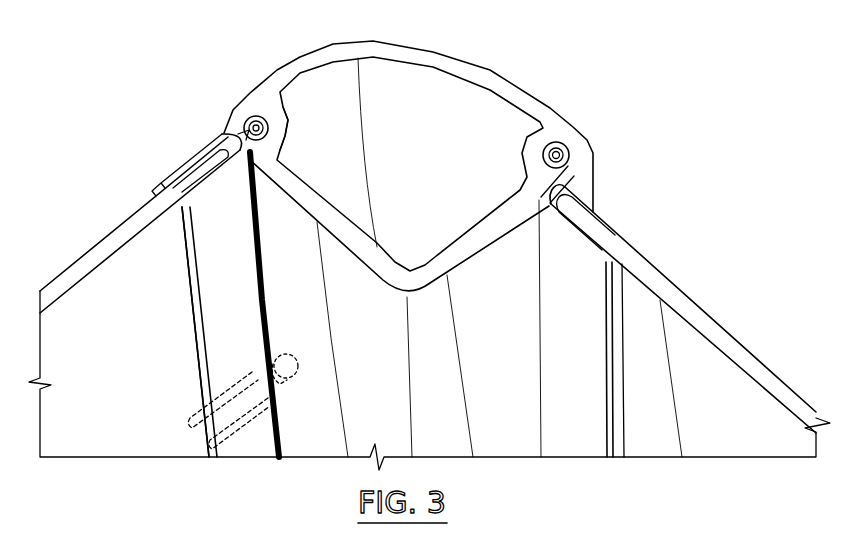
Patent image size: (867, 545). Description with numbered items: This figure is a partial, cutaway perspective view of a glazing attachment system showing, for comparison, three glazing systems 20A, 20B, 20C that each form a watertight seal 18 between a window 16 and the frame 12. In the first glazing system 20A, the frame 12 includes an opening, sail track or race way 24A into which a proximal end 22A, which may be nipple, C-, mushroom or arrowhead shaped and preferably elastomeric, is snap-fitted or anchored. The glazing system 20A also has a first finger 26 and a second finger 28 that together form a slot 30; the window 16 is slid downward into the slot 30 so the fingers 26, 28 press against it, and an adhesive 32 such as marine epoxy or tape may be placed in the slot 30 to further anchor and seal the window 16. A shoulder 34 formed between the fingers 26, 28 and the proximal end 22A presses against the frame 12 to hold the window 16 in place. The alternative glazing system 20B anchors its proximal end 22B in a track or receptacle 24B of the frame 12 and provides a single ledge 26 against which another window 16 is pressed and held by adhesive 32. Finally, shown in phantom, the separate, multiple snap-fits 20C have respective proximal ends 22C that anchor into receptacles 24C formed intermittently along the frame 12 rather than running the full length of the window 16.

The frame 12 is at (497, 87).
The window 16 is at (83, 267).
The watertight seal 18 is at (156, 150).
The glazing system 20A is at (202, 137).
The alternative glazing system 20B is at (606, 156).
The snap-fits 20C is at (246, 370).
The proximal end 22A is at (244, 117).
The proximal end 22B is at (569, 157).
The proximal ends 22C is at (272, 357).
The race way 24A is at (258, 117).
The receptacle 24B is at (550, 147).
The receptacles 24C is at (290, 356).
The first finger 26 is at (160, 178).
The second finger 28 is at (200, 198).
The slot 30 is at (215, 128).
The adhesive 32 is at (179, 304).
The shoulder 34 is at (252, 174).